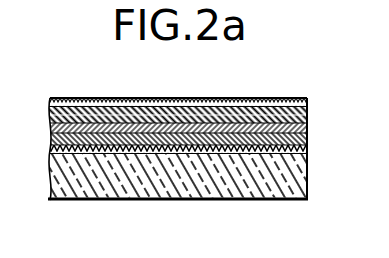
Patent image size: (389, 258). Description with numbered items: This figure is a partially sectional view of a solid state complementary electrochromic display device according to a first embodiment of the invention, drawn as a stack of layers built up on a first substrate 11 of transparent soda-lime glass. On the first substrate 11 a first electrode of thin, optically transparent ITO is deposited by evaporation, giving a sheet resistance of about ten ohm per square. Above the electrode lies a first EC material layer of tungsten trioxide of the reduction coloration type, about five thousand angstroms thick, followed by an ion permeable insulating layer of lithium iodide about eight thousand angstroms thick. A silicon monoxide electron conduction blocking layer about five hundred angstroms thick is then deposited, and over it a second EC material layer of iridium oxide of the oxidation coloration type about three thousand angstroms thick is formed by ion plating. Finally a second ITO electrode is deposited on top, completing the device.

The first substrate 11 is at (307, 163).